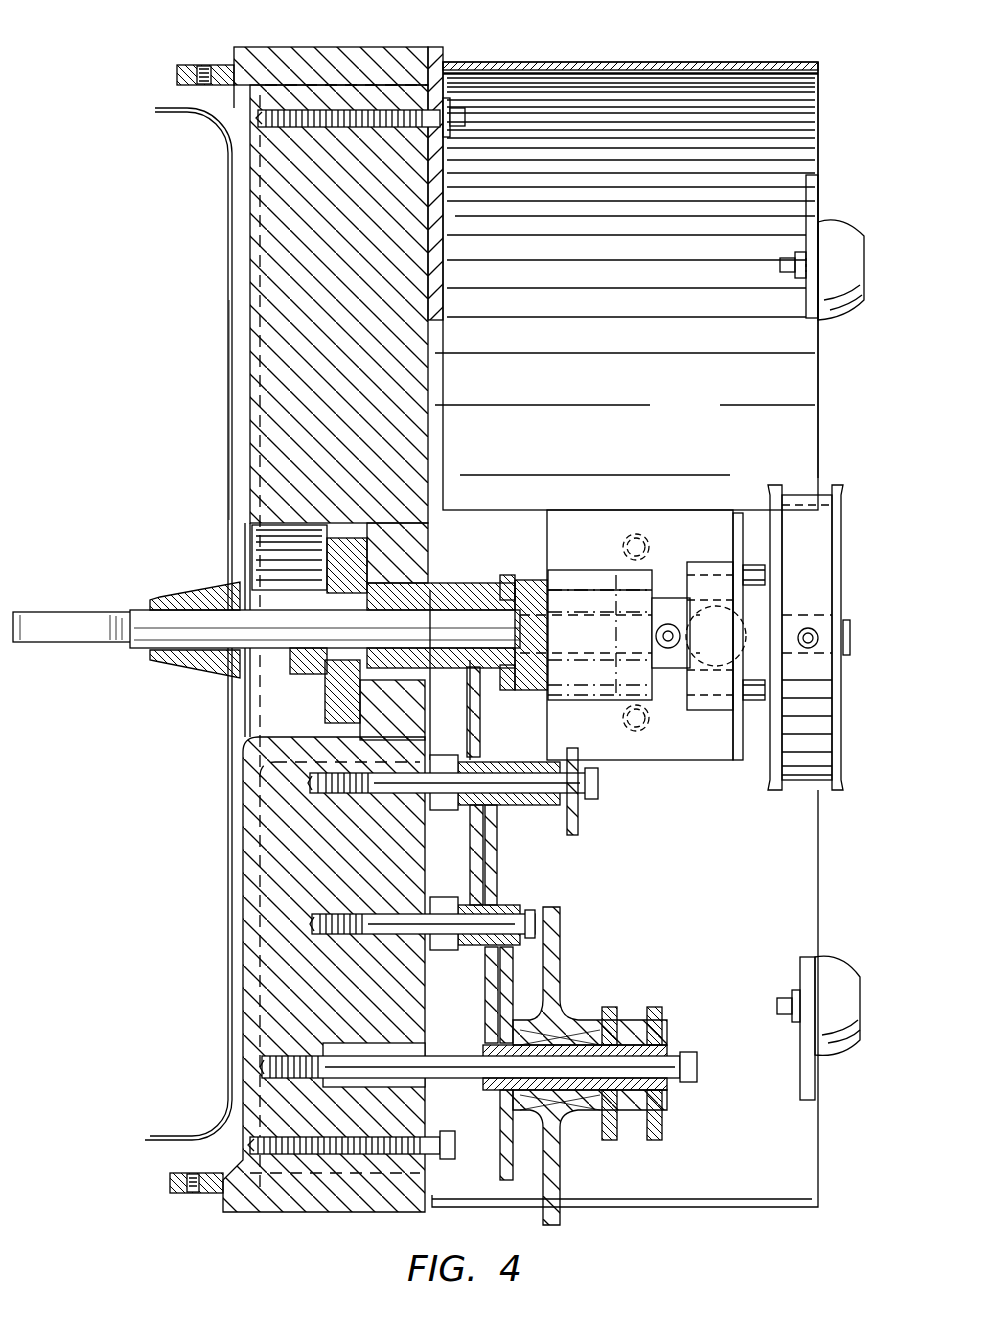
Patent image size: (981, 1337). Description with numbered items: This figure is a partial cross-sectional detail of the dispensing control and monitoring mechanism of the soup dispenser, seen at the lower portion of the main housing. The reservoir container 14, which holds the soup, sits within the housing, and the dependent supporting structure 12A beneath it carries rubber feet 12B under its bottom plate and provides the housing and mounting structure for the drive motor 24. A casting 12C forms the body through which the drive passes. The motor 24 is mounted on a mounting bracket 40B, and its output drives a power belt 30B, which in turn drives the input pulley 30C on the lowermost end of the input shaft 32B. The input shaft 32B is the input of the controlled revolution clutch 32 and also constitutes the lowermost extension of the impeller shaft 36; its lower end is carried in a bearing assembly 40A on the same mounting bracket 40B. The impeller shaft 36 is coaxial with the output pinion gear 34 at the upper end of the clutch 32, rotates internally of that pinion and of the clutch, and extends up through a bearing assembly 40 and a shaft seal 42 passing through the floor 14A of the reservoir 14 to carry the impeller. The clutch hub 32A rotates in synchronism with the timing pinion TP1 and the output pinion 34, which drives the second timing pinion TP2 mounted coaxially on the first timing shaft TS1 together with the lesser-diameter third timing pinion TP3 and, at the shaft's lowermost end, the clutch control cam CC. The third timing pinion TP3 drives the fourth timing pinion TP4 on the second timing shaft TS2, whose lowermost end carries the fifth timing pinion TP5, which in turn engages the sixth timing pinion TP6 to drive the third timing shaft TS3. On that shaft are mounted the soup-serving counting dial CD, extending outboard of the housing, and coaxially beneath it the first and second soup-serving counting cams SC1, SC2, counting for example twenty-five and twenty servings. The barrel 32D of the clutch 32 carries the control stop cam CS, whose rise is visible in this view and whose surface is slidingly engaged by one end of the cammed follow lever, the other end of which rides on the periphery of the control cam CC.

The dependent supporting structure 12A is at (658, 62).
The rubber feet 12B is at (849, 242).
The casting body 12C is at (300, 46).
The reservoir container 14 is at (163, 104).
The floor of the reservoir 14A is at (222, 272).
The drive motor 24 is at (692, 542).
The power belt 30B is at (829, 589).
The input pulley 30C is at (843, 530).
The controlled revolution clutch 32 is at (592, 604).
The clutch hub 32A is at (500, 576).
The input shaft 32B is at (849, 624).
The barrel of the clutch 32D is at (633, 536).
The output pinion gear 34 is at (322, 700).
The impeller shaft 36 is at (103, 612).
The bearing assembly 40 is at (292, 592).
The bearing assembly 40A is at (711, 690).
The mounting bracket 40B is at (740, 763).
The shaft seal 42 is at (186, 600).
The control stop cam CS is at (566, 575).
The clutch control cam CC is at (579, 822).
The soup-serving counting dial CD is at (556, 1226).
The timing pinion TP1 is at (482, 700).
The second timing pinion TP2 is at (478, 900).
The third timing pinion TP3 is at (522, 806).
The fourth timing pinion TP4 is at (492, 905).
The fifth timing pinion TP5 is at (546, 916).
The sixth timing pinion TP6 is at (505, 965).
The first timing shaft TS1 is at (581, 786).
The second timing shaft TS2 is at (480, 920).
The third timing shaft TS3 is at (448, 1060).
The first soup-serving counting cam SC1 is at (606, 1138).
The second soup-serving counting cam SC2 is at (656, 1138).